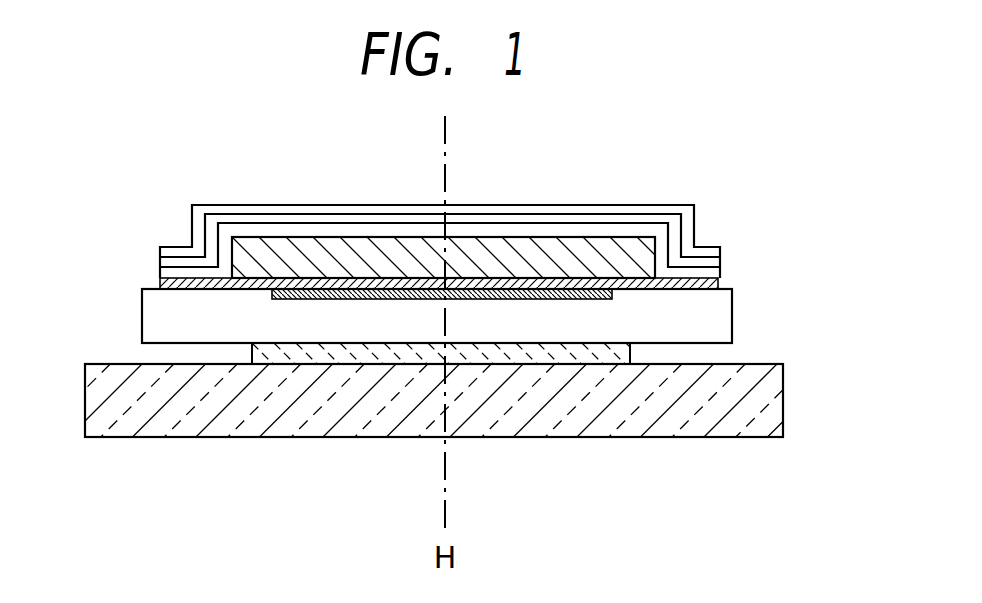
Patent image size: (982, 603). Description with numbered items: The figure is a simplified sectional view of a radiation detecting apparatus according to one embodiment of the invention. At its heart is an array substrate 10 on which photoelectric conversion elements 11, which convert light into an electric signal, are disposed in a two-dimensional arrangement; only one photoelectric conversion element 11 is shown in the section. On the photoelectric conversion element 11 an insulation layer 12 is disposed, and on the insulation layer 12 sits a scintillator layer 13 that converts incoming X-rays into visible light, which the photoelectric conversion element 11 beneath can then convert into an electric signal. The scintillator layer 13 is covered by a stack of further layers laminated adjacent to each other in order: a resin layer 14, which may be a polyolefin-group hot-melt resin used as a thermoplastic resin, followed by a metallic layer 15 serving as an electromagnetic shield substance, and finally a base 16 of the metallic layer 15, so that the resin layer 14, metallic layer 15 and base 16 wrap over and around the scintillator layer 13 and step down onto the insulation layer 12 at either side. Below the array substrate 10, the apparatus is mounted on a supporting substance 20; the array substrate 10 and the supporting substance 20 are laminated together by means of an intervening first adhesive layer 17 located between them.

The array substrate 10 is at (726, 313).
The photoelectric conversion element 11 is at (274, 300).
The insulation layer 12 is at (160, 282).
The scintillator layer 13 is at (240, 258).
The resin layer 14 is at (662, 259).
The metallic layer 15 is at (675, 230).
The base 16 is at (675, 210).
The first adhesive layer 17 is at (613, 356).
The supporting substance 20 is at (777, 400).